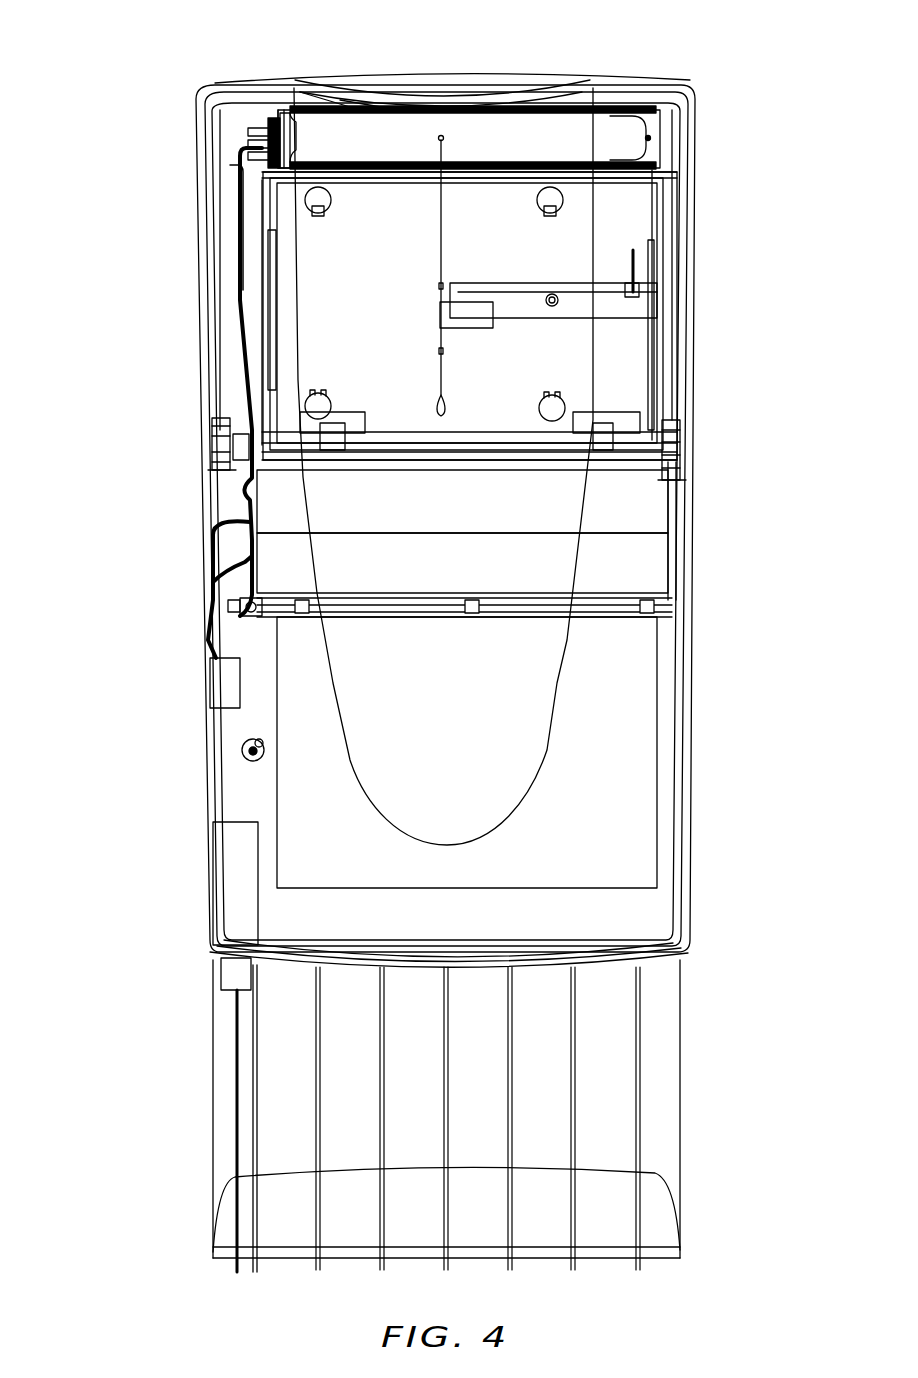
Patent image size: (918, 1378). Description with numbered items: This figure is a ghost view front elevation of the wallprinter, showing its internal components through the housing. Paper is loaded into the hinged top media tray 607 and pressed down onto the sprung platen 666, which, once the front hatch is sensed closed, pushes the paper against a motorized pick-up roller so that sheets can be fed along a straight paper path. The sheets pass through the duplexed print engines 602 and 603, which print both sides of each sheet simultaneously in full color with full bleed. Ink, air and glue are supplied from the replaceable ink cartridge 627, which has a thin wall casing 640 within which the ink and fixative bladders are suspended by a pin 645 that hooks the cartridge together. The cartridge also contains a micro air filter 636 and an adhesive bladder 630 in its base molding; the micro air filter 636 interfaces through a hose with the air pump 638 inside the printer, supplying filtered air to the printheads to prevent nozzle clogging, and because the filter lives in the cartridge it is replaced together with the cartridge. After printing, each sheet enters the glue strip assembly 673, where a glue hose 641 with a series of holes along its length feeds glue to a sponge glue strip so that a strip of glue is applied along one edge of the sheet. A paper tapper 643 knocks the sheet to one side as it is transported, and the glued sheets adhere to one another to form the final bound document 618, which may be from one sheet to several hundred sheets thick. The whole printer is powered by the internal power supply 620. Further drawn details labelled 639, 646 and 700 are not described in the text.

The print engine 602 is at (648, 505).
The print engine 603 is at (648, 578).
The media tray 607 is at (265, 378).
The bound document 618 is at (262, 922).
The power supply 620 is at (310, 868).
The ink cartridge 627 is at (555, 125).
The adhesive bladder 630 is at (285, 118).
The micro air filter 636 is at (265, 150).
The air pump 638 is at (248, 752).
The cable loop 639 is at (210, 572).
The thin wall casing 640 is at (668, 85).
The glue hose 641 is at (240, 493).
The paper tapper 643 is at (235, 848).
The pin 645 is at (650, 137).
The wire 646 is at (240, 300).
The sprung platen 666 is at (615, 225).
The glue strip assembly 673 is at (225, 688).
The connector block 700 is at (215, 432).